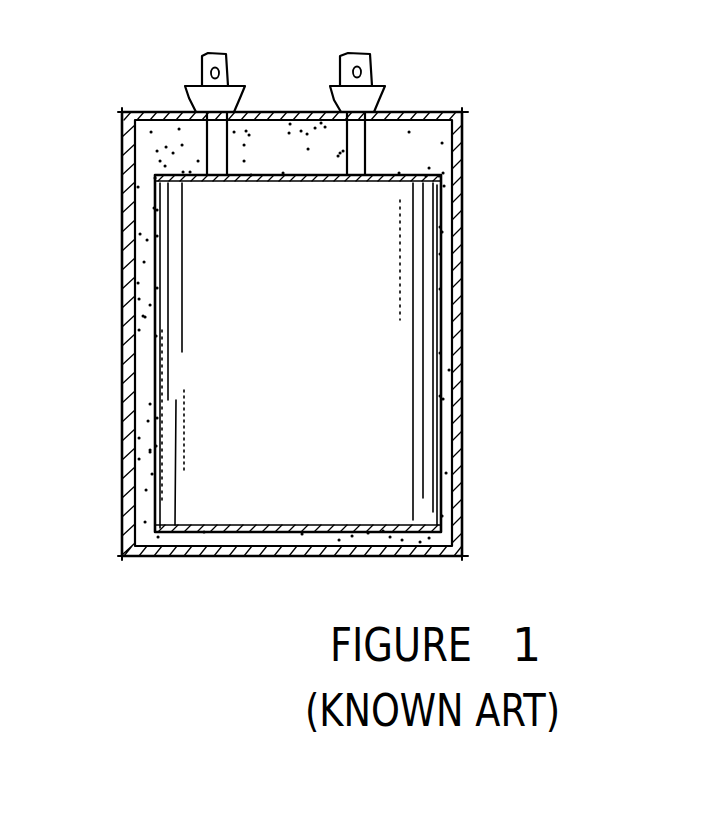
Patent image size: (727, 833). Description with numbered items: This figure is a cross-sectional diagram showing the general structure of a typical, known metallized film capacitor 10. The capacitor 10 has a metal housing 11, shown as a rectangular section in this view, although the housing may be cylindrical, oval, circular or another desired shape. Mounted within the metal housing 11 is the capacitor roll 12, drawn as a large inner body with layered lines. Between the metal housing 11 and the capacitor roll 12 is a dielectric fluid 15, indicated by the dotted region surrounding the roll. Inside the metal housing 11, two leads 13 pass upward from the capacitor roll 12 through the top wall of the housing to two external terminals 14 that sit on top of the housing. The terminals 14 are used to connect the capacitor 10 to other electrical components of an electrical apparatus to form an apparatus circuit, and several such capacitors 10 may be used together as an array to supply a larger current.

The metallized film capacitor 10 is at (514, 104).
The metal housing 11 is at (450, 285).
The capacitor roll 12 is at (400, 479).
The leads 13 is at (218, 137).
The external terminals 14 is at (222, 52).
The dielectric fluid 15 is at (157, 152).